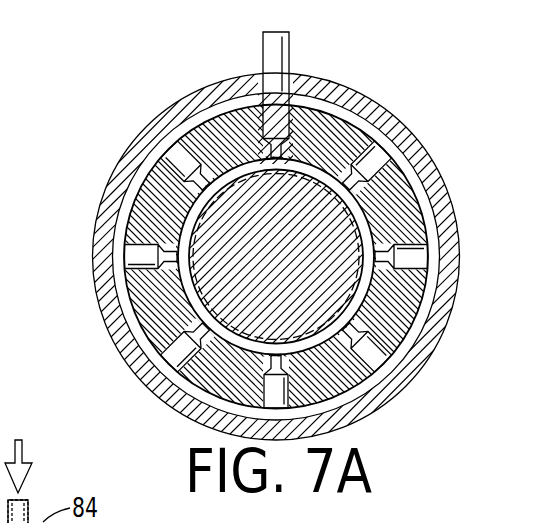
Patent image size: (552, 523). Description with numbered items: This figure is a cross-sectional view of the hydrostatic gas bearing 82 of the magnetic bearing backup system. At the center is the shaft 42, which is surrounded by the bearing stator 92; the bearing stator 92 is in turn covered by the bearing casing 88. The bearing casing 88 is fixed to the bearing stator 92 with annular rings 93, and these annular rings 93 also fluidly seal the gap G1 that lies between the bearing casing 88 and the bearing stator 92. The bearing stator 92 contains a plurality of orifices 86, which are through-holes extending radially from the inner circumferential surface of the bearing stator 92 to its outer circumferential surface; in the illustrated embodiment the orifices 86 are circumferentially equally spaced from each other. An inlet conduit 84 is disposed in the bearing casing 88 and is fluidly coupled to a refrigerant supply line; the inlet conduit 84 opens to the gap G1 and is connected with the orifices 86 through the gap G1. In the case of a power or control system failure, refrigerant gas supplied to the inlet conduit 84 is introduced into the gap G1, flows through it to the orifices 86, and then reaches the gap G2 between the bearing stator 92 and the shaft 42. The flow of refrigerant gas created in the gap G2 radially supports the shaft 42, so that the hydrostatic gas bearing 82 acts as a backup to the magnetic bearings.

The hydrostatic gas bearing 82 is at (286, 236).
The inlet conduit 84 is at (263, 70).
The orifices 86 is at (412, 133).
The bearing casing 88 is at (158, 120).
The bearing stator 92 is at (135, 203).
The annular rings 93 is at (421, 200).
The shaft 42 is at (187, 280).
The gap G1 is at (430, 233).
The gap G2 is at (358, 297).